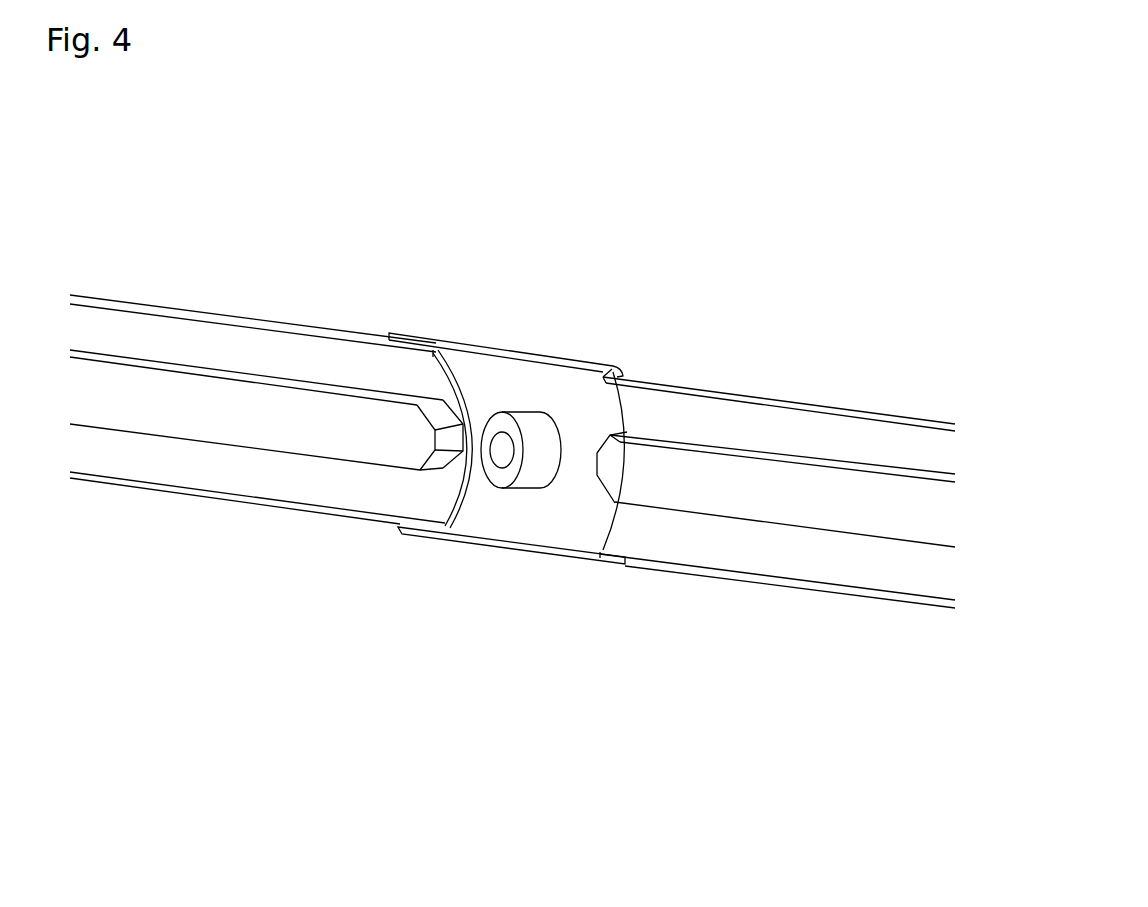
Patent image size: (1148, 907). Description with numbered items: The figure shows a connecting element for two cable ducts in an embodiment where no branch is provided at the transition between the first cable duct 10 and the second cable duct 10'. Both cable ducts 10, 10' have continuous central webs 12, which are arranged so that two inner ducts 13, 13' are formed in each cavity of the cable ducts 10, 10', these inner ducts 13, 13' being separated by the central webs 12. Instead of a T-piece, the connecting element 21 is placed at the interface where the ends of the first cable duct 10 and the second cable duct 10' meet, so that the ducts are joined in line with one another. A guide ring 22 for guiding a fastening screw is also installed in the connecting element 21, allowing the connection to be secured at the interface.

The first cable duct 10 is at (261, 475).
The second cable duct 10' is at (776, 386).
The central web 12 is at (757, 483).
The inner duct 13 is at (256, 291).
The inner duct 13' is at (252, 607).
The connecting element 21 is at (508, 390).
The guide ring 22 is at (539, 447).